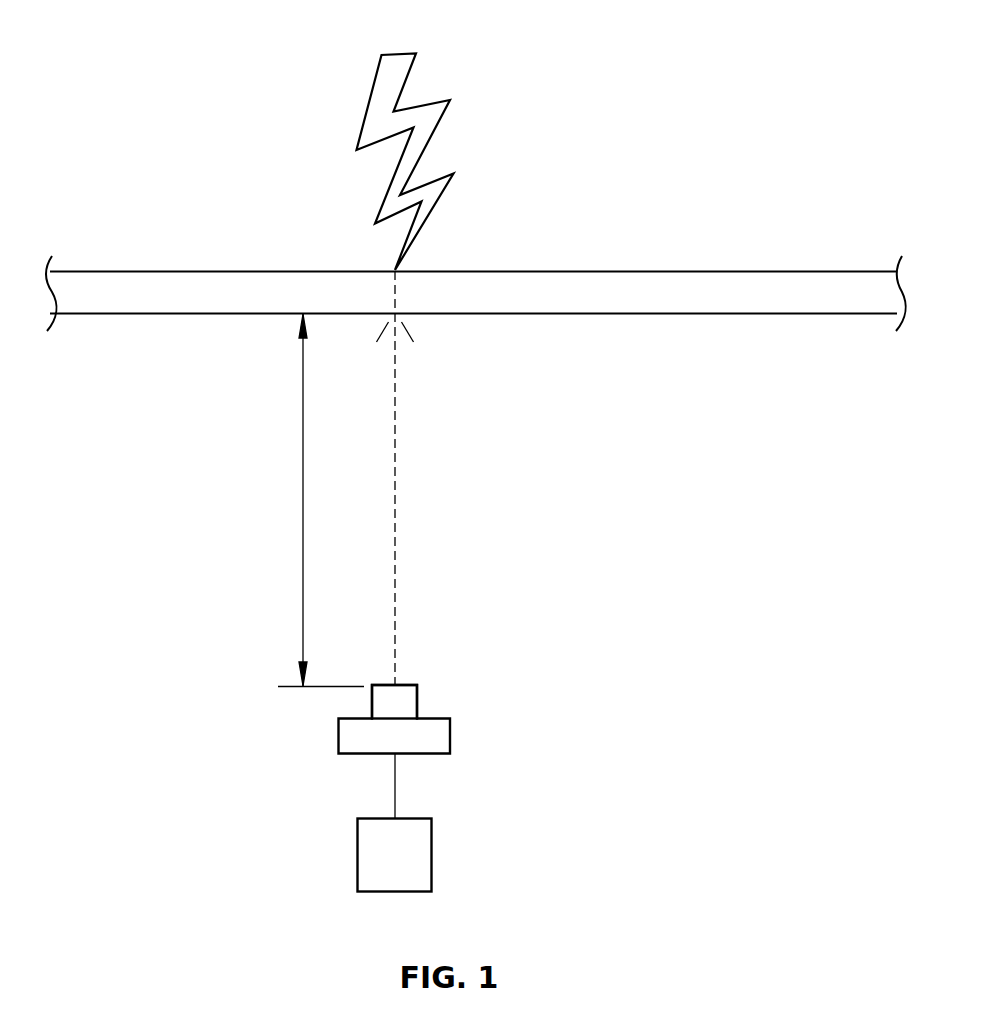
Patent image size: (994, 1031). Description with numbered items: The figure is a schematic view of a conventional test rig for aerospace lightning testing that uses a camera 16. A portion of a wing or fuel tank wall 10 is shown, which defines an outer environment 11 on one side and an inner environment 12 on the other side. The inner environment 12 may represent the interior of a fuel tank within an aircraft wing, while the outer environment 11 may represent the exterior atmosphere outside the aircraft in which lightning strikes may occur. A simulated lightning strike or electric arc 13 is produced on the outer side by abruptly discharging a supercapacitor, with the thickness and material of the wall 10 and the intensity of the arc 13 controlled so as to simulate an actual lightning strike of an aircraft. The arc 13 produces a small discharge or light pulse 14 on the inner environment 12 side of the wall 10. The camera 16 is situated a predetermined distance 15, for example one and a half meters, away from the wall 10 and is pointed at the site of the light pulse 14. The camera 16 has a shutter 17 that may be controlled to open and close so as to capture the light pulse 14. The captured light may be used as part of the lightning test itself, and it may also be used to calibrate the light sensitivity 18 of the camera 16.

The wall 10 is at (187, 290).
The outer environment 11 is at (752, 222).
The inner environment 12 is at (786, 372).
The electric arc 13 is at (430, 119).
The light pulse 14 is at (428, 354).
The predetermined distance 15 is at (302, 390).
The camera 16 is at (437, 738).
The shutter 17 is at (405, 703).
The light sensitivity 18 is at (395, 823).